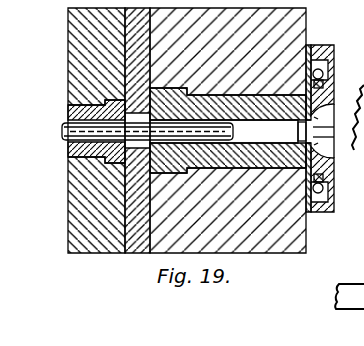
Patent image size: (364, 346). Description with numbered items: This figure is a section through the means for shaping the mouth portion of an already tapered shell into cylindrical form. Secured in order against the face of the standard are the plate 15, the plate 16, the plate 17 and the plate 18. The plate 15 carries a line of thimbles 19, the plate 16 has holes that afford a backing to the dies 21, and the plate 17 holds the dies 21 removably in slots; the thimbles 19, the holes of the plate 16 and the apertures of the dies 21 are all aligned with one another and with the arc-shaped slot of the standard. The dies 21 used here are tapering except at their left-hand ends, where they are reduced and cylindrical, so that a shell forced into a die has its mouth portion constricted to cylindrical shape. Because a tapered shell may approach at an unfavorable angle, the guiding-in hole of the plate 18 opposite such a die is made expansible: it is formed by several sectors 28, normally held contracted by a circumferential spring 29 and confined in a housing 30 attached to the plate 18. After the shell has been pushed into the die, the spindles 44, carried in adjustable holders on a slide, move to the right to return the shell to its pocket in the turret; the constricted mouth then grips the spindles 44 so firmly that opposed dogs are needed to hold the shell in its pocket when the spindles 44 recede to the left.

The plate 15 is at (93, 250).
The plate 16 is at (135, 252).
The plate 17 is at (280, 251).
The plate 18 is at (304, 197).
The thimbles 19 is at (100, 160).
The dies 21 is at (223, 167).
The sectors 28 is at (303, 91).
The circumferential spring 29 is at (334, 68).
The housing 30 is at (328, 192).
The spindles 44 is at (207, 133).